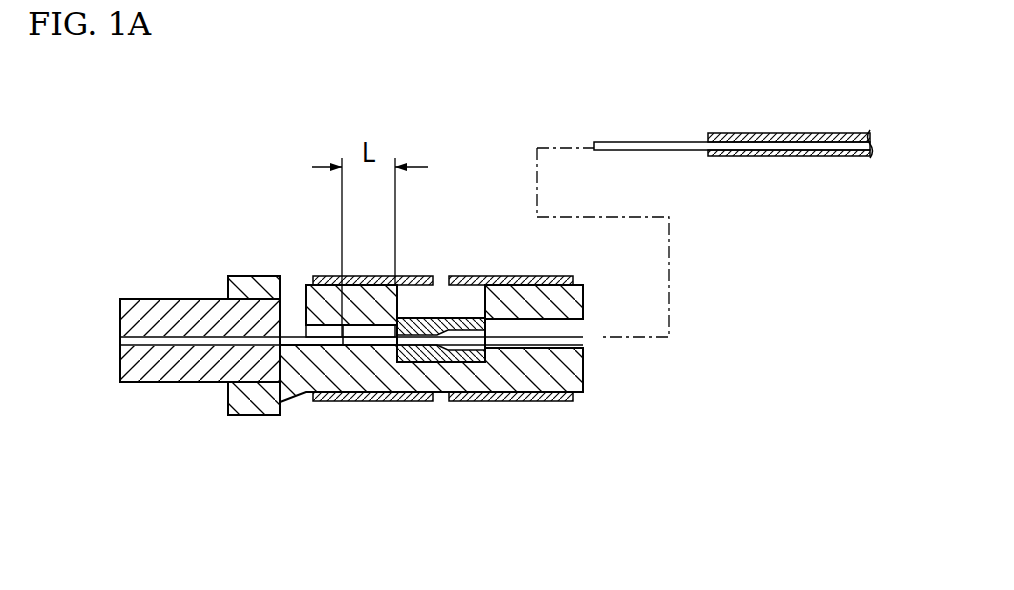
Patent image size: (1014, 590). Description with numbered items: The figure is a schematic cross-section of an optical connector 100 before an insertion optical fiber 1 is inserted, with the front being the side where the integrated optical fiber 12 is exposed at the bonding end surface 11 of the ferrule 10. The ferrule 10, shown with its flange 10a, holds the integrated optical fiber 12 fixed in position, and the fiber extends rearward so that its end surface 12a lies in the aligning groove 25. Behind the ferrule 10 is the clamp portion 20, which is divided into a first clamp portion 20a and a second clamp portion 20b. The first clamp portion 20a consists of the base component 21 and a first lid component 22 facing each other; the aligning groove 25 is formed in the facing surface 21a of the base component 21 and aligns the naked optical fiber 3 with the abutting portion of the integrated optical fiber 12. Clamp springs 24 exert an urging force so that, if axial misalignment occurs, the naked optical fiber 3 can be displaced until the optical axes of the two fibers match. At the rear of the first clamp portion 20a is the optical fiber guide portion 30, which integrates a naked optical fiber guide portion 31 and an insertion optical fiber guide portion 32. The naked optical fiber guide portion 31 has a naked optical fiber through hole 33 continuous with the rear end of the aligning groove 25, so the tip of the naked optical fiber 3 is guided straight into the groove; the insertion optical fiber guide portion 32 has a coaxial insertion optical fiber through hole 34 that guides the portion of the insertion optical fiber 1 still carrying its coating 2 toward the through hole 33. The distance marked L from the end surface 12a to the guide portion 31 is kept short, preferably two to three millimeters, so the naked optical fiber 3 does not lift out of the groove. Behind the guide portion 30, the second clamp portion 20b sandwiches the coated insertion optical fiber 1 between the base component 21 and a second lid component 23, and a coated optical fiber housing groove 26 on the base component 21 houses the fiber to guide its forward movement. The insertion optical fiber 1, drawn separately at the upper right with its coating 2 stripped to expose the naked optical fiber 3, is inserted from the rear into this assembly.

The optical connector 100 is at (192, 183).
The ferrule 10 is at (153, 299).
The flange portion 10a is at (248, 276).
The bonding end surface 11 is at (118, 372).
The integrated optical fiber 12 is at (298, 346).
The end surface of the integrated optical fiber 12a is at (356, 340).
The aligning groove 25 is at (378, 346).
The first lid component 22 is at (312, 308).
The facing surface 21a is at (355, 335).
The clamp spring 24 is at (368, 277).
The base component 21 is at (540, 378).
The second lid component 23 is at (573, 300).
The coated optical fiber housing groove 26 is at (566, 346).
The clamp portion 20 is at (577, 530).
The first clamp portion 20a is at (440, 478).
The second clamp portion 20b is at (580, 478).
The optical fiber guide portion 30 is at (518, 205).
The naked optical fiber guide portion 31 is at (415, 325).
The insertion optical fiber guide portion 32 is at (462, 325).
The naked optical fiber through hole 33 is at (432, 355).
The insertion optical fiber through hole 34 is at (468, 355).
The insertion optical fiber 1 is at (797, 124).
The coating 2 is at (782, 156).
The naked optical fiber 3 is at (656, 142).